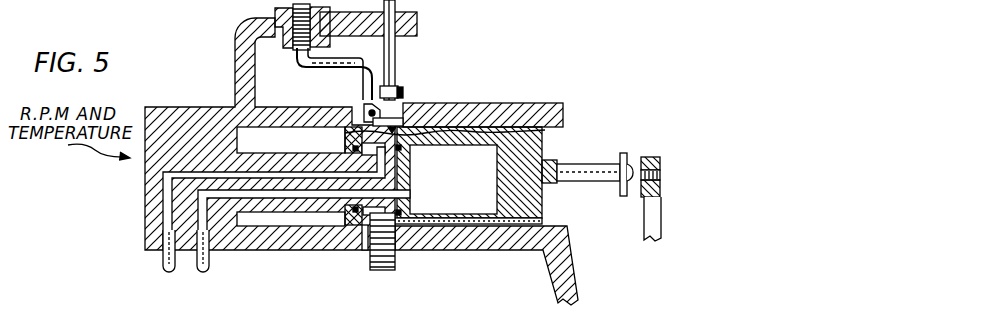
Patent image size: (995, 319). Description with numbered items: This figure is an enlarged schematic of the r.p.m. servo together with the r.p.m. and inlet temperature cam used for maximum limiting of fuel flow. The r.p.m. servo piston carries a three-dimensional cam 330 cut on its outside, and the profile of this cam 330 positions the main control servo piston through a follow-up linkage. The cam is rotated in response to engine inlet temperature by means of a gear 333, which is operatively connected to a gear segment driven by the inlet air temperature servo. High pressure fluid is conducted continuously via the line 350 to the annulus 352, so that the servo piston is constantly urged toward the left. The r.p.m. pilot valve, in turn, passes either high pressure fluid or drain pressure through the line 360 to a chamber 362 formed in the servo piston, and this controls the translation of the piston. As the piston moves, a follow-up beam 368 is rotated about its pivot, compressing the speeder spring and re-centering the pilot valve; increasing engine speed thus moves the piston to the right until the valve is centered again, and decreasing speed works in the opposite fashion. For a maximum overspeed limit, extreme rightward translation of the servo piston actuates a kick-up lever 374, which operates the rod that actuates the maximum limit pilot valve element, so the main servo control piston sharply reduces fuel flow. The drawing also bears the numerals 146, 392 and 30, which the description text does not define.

The threaded fitting 146 is at (253, 25).
The kick-up lever 374 is at (364, 112).
The three-dimensional cam 330 is at (450, 127).
The valve body block 392 is at (530, 146).
The chamber 362 is at (458, 186).
The follow-up beam 368 is at (644, 222).
The gear 333 is at (396, 259).
The annulus 352 is at (367, 251).
The line 350 is at (163, 266).
The line 360 is at (208, 267).
The governor 30 is at (745, 5).